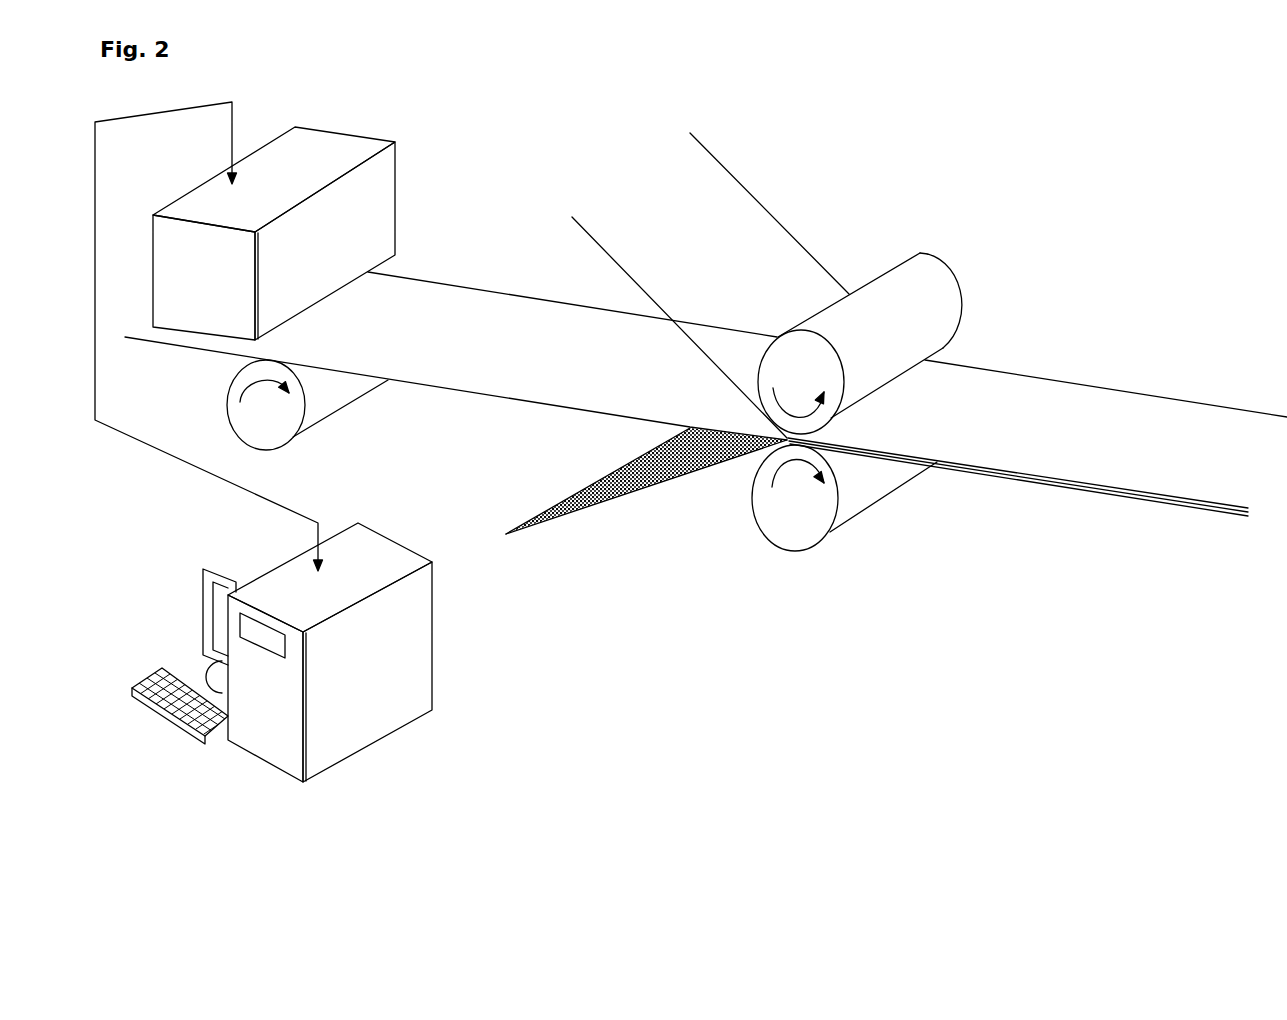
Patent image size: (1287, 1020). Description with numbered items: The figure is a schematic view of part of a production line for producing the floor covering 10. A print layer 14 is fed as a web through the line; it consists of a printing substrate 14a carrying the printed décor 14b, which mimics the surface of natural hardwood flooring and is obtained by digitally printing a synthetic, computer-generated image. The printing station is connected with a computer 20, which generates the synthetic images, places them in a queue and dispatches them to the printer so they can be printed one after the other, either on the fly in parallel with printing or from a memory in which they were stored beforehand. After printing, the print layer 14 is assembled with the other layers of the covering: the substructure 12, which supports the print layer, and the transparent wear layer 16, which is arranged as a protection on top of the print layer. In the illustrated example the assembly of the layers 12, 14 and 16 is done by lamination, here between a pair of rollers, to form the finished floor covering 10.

The floor covering 10 is at (1122, 356).
The substructure 12 is at (650, 487).
The print layer 14 is at (508, 276).
The printing substrate 14a is at (160, 338).
The printed décor 14b is at (403, 292).
The wear layer 16 is at (758, 235).
The computer 20 is at (435, 622).